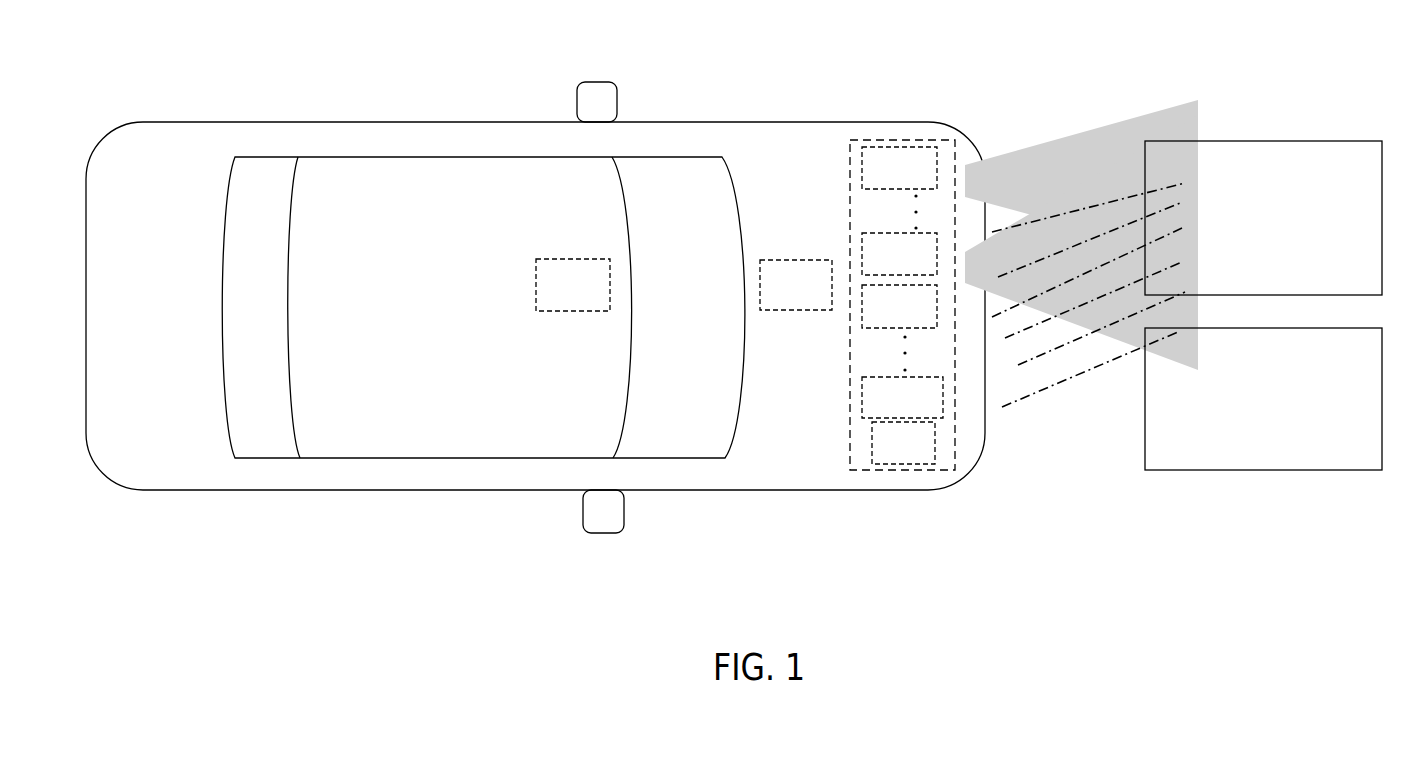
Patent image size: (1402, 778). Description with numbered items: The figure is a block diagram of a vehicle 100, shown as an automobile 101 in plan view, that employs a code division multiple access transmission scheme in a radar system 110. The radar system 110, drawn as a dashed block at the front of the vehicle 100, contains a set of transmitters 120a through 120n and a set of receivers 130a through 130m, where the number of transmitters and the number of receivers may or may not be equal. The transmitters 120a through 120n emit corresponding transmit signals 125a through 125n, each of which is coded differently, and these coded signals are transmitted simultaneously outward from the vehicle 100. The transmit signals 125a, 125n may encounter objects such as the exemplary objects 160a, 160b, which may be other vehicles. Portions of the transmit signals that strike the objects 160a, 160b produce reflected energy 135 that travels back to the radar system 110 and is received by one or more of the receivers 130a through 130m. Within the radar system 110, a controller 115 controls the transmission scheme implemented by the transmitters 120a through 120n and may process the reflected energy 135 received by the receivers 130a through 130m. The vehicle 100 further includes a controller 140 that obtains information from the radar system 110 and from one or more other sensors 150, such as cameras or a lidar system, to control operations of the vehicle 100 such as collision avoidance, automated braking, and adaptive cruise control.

The vehicle 100 is at (535, 307).
The automobile 101 is at (252, 158).
The radar system 110 is at (857, 140).
The controller 115 is at (903, 443).
The transmitter 120a is at (899, 168).
The transmitter 120n is at (899, 254).
The transmit signal 125a is at (1075, 130).
The transmit signal 125n is at (1183, 311).
The receiver 130a is at (899, 306).
The receiver 130m is at (902, 397).
The reflected energy 135 is at (1056, 404).
The controller 140 is at (820, 299).
The other sensors 150 is at (597, 301).
The object 160a is at (1293, 229).
The object 160b is at (1293, 397).